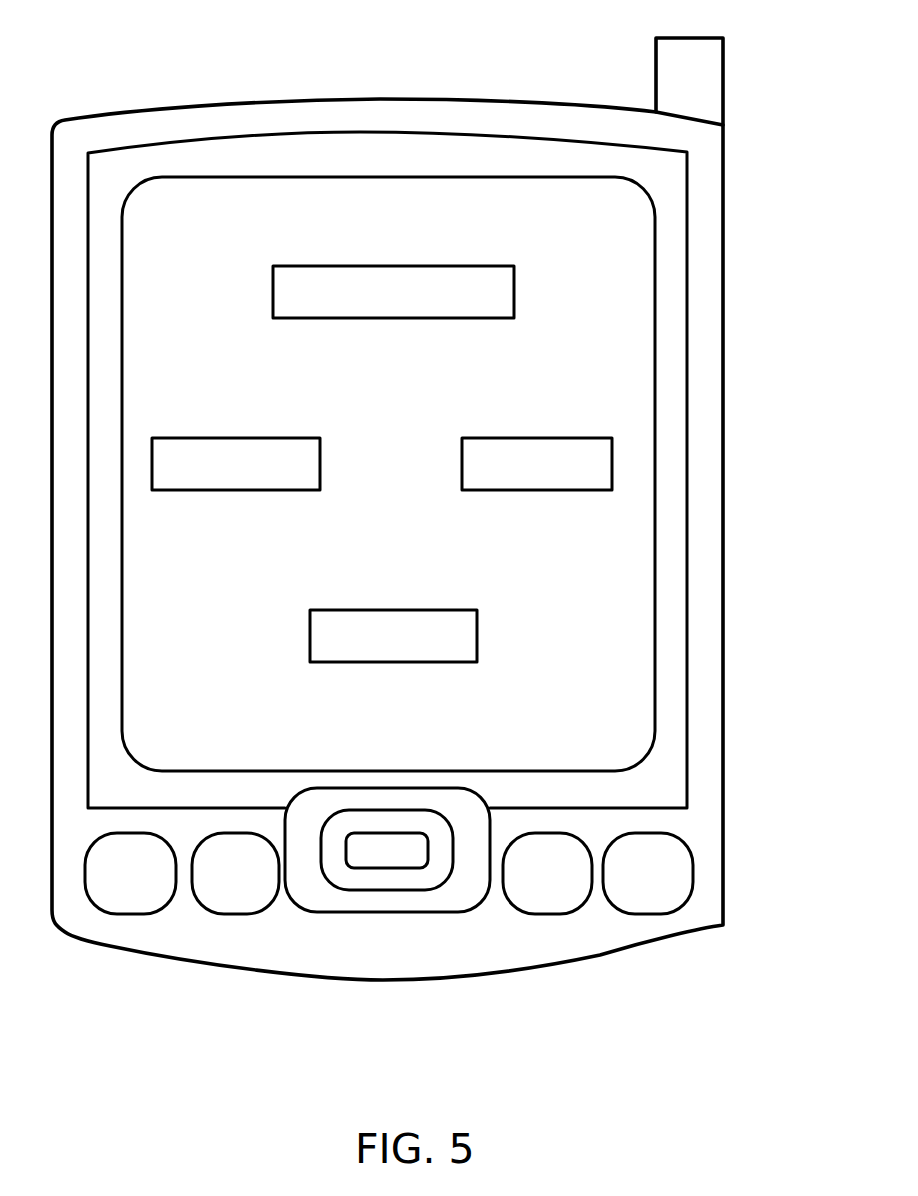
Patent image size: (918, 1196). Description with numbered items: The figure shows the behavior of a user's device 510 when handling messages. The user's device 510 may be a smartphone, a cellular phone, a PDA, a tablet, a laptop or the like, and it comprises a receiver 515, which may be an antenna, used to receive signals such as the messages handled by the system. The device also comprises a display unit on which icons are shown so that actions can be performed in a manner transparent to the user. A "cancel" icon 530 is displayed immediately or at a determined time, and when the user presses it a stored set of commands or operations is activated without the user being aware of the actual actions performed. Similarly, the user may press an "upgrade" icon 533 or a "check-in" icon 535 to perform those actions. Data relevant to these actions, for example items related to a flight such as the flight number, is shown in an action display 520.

The user's device 510 is at (724, 836).
The receiver 515 is at (724, 72).
The action display 520 is at (515, 288).
The "cancel" icon 530 is at (532, 437).
The "upgrade" icon 533 is at (478, 632).
The "check-in" icon 535 is at (232, 437).